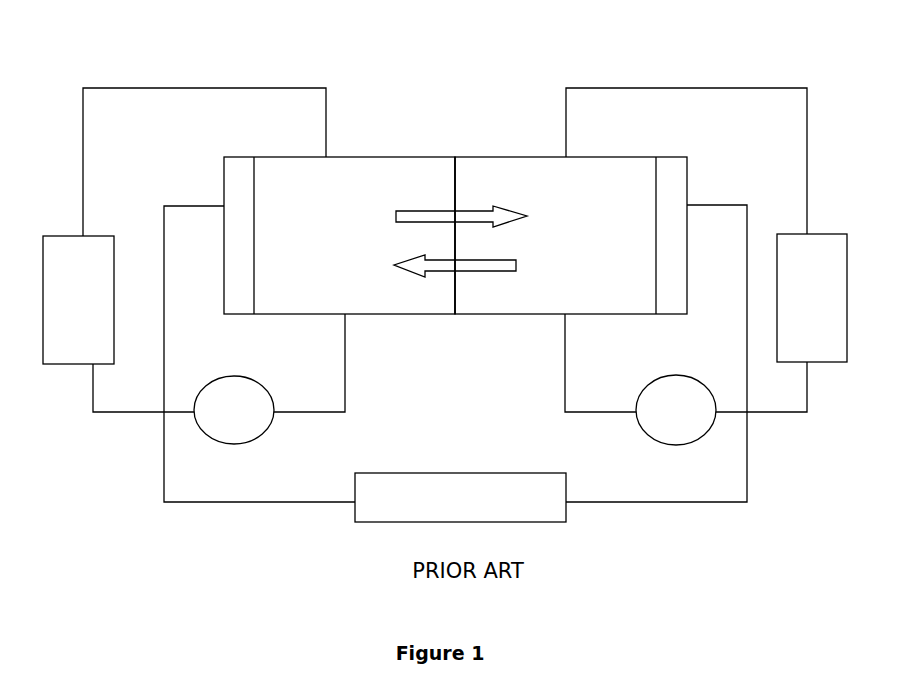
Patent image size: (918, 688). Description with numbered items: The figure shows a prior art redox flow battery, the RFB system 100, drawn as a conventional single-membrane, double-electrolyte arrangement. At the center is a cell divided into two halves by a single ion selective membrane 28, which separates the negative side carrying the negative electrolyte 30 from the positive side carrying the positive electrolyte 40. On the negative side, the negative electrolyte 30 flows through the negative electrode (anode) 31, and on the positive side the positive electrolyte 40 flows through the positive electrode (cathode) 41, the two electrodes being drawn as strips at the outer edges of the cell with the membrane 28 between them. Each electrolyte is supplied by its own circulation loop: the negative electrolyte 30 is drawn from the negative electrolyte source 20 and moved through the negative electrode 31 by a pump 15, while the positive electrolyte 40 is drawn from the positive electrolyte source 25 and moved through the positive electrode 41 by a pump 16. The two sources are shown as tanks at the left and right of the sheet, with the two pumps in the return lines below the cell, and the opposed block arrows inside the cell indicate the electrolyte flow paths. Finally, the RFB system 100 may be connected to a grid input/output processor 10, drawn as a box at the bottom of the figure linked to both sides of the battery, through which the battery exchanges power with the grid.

The RFB system 100 is at (446, 75).
The negative electrolyte 30 is at (368, 155).
The positive electrolyte 40 is at (536, 155).
The negative electrode 31 is at (244, 195).
The positive electrode 41 is at (668, 193).
The ion selective membrane 28 is at (454, 289).
The negative electrolyte source 20 is at (118, 324).
The positive electrolyte source 25 is at (781, 323).
The pump 15 is at (269, 379).
The pump 16 is at (640, 379).
The grid input/output processor 10 is at (460, 497).